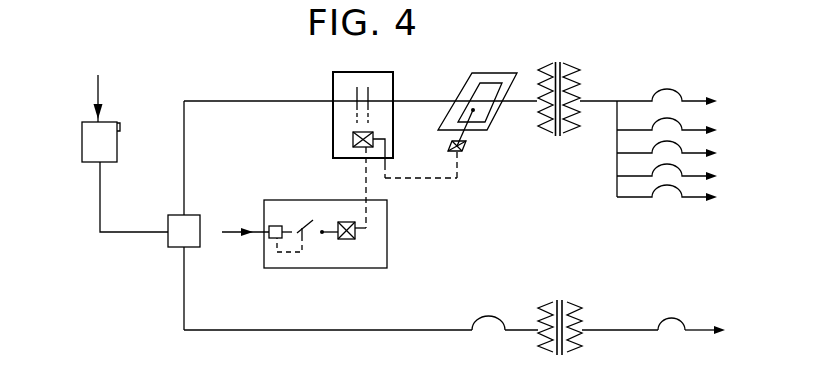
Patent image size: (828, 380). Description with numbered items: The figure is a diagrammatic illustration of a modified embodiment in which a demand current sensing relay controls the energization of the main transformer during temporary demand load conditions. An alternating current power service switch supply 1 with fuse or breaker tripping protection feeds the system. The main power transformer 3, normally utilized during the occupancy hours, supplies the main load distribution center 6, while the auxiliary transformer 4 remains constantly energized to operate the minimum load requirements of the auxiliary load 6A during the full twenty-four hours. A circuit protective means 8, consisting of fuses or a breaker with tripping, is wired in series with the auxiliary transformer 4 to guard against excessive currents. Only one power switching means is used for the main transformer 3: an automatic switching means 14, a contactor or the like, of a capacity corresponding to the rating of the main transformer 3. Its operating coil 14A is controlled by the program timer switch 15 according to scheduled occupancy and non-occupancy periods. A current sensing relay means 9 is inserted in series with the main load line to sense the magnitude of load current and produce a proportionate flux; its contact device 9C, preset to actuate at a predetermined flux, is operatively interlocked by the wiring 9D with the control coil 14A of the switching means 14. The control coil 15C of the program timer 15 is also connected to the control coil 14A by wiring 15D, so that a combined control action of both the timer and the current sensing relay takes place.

The alternating current power service switch supply 1 is at (118, 148).
The main power transformer 3 is at (565, 63).
The auxiliary transformer 4 is at (557, 302).
The main load distribution center 6 is at (628, 100).
The auxiliary load 6A is at (662, 320).
The circuit protective means 8 is at (493, 321).
The current sensing relay means 9 is at (483, 73).
The contact device 9C is at (468, 133).
The wiring 9D is at (450, 180).
The automatic switching means 14 is at (328, 75).
The operating coil 14A is at (353, 137).
The program timer switch 15 is at (307, 200).
The control coil 15C is at (352, 239).
The wiring 15D is at (363, 186).